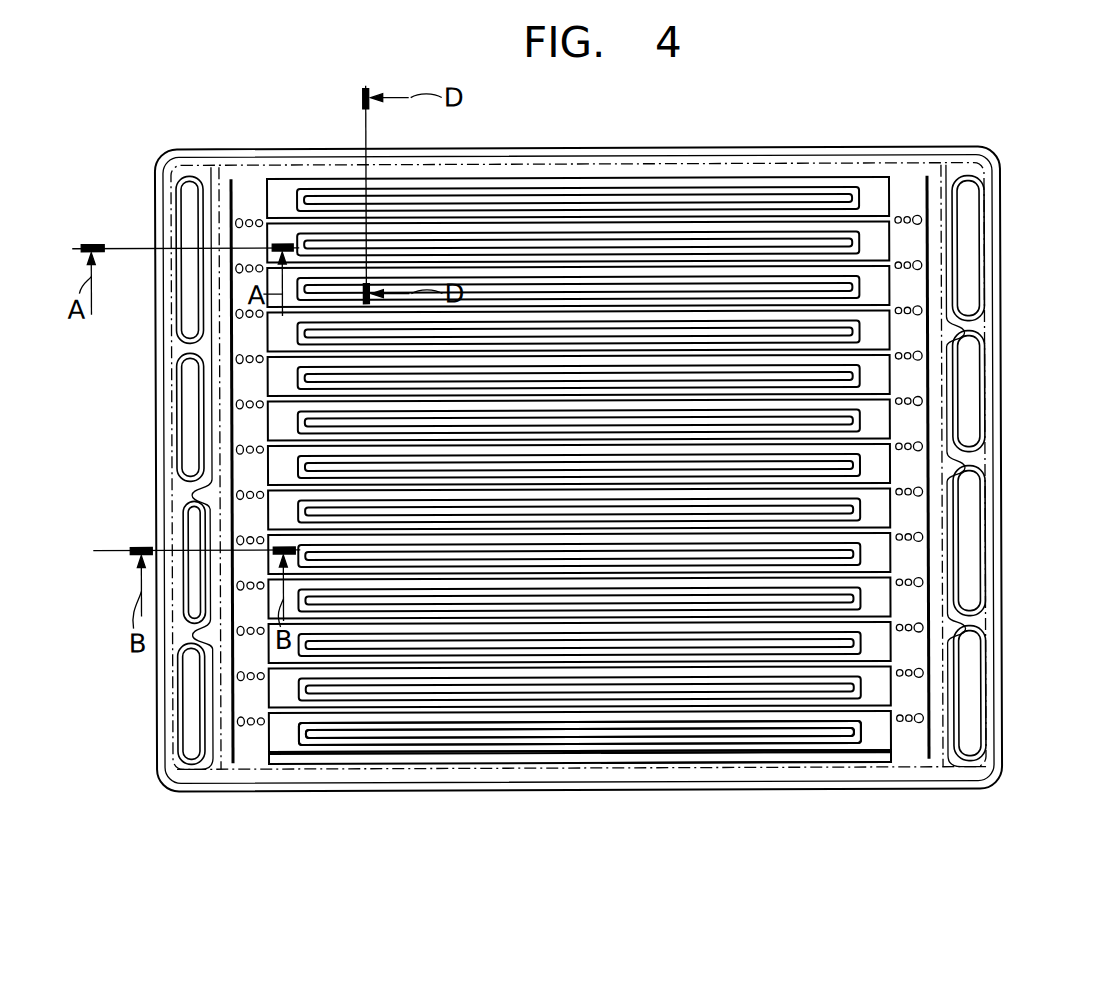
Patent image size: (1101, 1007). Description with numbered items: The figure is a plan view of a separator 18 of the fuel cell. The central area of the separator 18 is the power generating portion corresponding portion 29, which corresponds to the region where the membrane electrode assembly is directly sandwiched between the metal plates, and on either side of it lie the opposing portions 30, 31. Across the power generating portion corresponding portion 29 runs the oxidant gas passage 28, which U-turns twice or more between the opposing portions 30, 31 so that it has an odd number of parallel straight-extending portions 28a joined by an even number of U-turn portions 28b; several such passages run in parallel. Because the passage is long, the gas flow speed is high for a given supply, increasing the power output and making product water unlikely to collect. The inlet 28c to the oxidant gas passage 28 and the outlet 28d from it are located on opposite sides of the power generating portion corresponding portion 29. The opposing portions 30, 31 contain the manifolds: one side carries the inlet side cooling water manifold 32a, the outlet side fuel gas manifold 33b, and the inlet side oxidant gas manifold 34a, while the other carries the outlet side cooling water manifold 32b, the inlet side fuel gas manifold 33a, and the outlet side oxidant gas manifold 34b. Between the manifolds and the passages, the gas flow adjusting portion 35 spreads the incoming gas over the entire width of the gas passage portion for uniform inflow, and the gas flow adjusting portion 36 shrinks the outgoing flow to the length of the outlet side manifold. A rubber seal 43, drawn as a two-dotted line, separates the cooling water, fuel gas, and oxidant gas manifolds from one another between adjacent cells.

The separator 18 is at (655, 151).
The oxidant gas passage 28 is at (413, 752).
The straight-extending portions 28a is at (357, 752).
The U-turn portions 28b is at (298, 725).
The inlet 28c is at (267, 754).
The outlet 28d is at (896, 726).
The power generating portion corresponding portion 29 is at (597, 752).
The opposing portion 30 is at (232, 754).
The opposing portion 31 is at (906, 733).
The inlet side cooling water manifold 32a is at (192, 527).
The outlet side cooling water manifold 32b is at (965, 240).
The inlet side fuel gas manifold 33a is at (968, 406).
The outlet side fuel gas manifold 33b is at (190, 703).
The inlet side oxidant gas manifold 34a is at (190, 297).
The outlet side oxidant gas manifold 34b is at (970, 677).
The gas flow adjusting portion 35 is at (258, 215).
The gas flow adjusting portion 36 is at (912, 215).
The rubber seal 43 is at (176, 418).